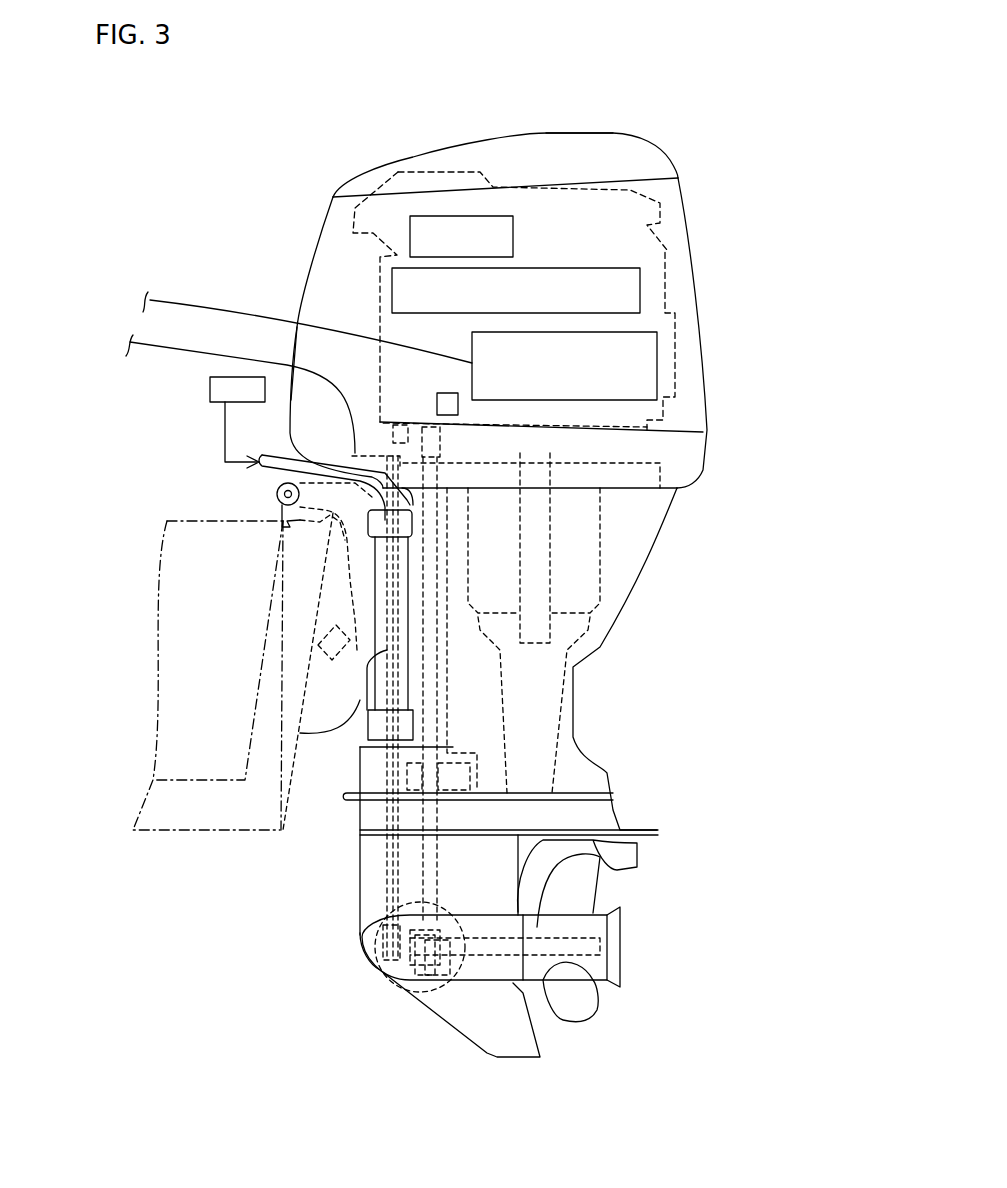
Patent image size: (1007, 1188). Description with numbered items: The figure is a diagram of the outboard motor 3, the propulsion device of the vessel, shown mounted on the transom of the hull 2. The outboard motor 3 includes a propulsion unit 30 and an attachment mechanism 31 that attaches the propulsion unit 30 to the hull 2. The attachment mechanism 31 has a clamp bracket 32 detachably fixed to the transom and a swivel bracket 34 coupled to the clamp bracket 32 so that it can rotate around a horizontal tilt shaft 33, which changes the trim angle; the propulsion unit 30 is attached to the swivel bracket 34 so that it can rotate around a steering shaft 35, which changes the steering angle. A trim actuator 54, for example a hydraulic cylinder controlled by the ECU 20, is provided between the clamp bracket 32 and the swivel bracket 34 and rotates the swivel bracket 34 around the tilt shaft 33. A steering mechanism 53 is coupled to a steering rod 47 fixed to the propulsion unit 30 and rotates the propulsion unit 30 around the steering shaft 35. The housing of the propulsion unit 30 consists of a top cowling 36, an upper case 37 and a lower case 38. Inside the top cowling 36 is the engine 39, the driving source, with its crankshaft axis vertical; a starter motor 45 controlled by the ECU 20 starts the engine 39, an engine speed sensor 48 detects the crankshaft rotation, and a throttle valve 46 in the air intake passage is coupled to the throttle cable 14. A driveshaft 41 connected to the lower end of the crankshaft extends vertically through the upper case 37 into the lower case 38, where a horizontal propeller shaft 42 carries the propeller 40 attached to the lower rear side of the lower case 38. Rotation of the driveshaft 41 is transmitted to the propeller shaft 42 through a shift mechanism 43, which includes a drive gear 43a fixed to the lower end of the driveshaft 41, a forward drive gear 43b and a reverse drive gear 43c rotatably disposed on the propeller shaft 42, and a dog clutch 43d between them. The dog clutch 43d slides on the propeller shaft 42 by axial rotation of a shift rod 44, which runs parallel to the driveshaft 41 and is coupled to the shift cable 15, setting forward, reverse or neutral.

The hull 2 is at (170, 580).
The outboard motor 3 is at (256, 270).
The throttle cable 14 is at (190, 301).
The shift cable 15 is at (160, 340).
The ECU 20 is at (503, 238).
The propulsion unit 30 is at (621, 132).
The attachment mechanism 31 is at (316, 742).
The clamp bracket 32 is at (322, 692).
The tilt shaft 33 is at (277, 494).
The swivel bracket 34 is at (345, 580).
The steering shaft 35 is at (380, 700).
The top cowling 36 is at (707, 384).
The upper case 37 is at (633, 597).
The lower case 38 is at (358, 875).
The engine 39 is at (667, 252).
The propeller 40 is at (583, 1002).
The driveshaft 41 is at (432, 669).
The propeller shaft 42 is at (473, 937).
The shift mechanism 43 is at (237, 908).
The drive gear 43a is at (377, 903).
The forward drive gear 43b is at (405, 958).
The reverse drive gear 43c is at (440, 1020).
The dog clutch 43d is at (410, 992).
The shift rod 44 is at (405, 765).
The starter motor 45 is at (638, 291).
The throttle valve 46 is at (650, 374).
The steering rod 47 is at (266, 456).
The engine speed sensor 48 is at (437, 411).
The steering mechanism 53 is at (210, 390).
The trim actuator 54 is at (300, 653).